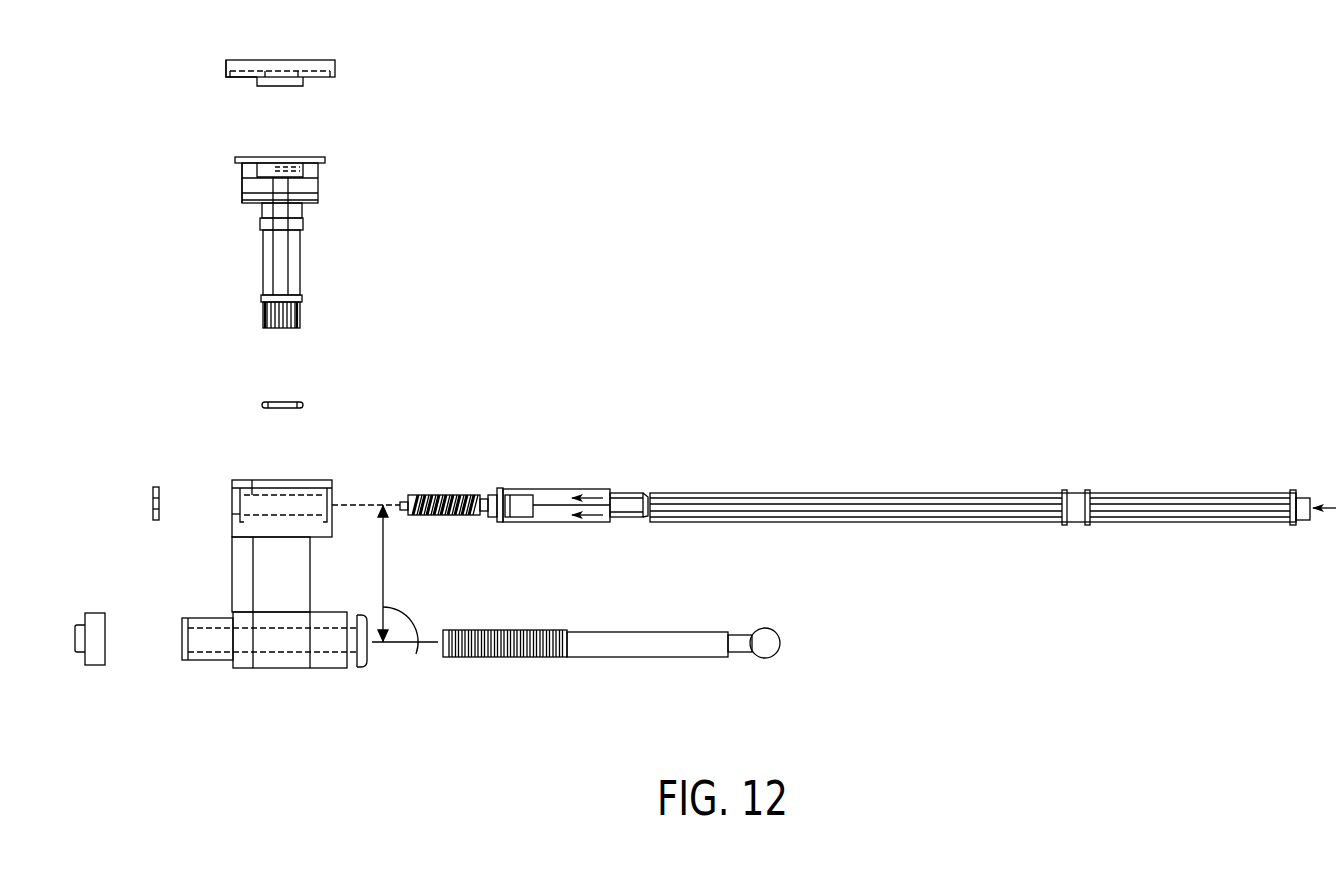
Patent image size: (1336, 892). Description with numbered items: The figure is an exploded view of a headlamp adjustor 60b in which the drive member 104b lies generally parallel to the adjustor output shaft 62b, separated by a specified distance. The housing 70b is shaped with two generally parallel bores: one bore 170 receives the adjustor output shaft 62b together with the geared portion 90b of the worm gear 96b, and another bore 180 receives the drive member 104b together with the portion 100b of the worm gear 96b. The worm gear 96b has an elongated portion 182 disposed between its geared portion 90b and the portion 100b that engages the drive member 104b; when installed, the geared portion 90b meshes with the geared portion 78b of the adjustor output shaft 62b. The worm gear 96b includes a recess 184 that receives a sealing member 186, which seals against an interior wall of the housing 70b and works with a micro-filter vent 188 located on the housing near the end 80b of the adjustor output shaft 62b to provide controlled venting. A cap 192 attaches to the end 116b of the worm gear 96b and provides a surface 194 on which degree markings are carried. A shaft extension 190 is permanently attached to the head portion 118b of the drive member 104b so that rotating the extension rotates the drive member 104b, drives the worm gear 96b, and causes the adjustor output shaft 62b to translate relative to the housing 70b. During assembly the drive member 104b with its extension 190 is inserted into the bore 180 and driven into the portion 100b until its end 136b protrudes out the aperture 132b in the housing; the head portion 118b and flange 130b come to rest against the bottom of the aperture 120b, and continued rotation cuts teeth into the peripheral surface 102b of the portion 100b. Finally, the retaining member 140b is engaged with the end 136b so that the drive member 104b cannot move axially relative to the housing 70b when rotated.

The cap 192 is at (348, 53).
The surface 194 is at (225, 68).
The end of the worm gear 116b is at (318, 157).
The portion of the worm gear 100b is at (320, 170).
The peripheral surface 102b is at (242, 173).
The worm gear 96b is at (342, 211).
The recess 184 is at (262, 222).
The elongated portion 182 is at (295, 262).
The geared portion of the worm gear 90b is at (303, 315).
The sealing member 186 is at (306, 402).
The bore 180 is at (252, 495).
The retaining member 140b is at (154, 484).
The housing 70b is at (328, 478).
The end of the drive member 136b is at (400, 505).
The drive member 104b is at (508, 485).
The head portion 118b is at (530, 495).
The extension 190 is at (812, 490).
The flange 130b is at (498, 523).
The aperture 132b is at (232, 520).
The aperture 120b is at (334, 519).
The end of the adjustor output shaft 80b is at (443, 643).
The geared portion of the adjustor output shaft 78b is at (526, 627).
The adjustor output shaft 62b is at (648, 640).
The bore 170 is at (212, 654).
The vent 188 is at (93, 668).
The headlamp adjustor 60b is at (344, 702).